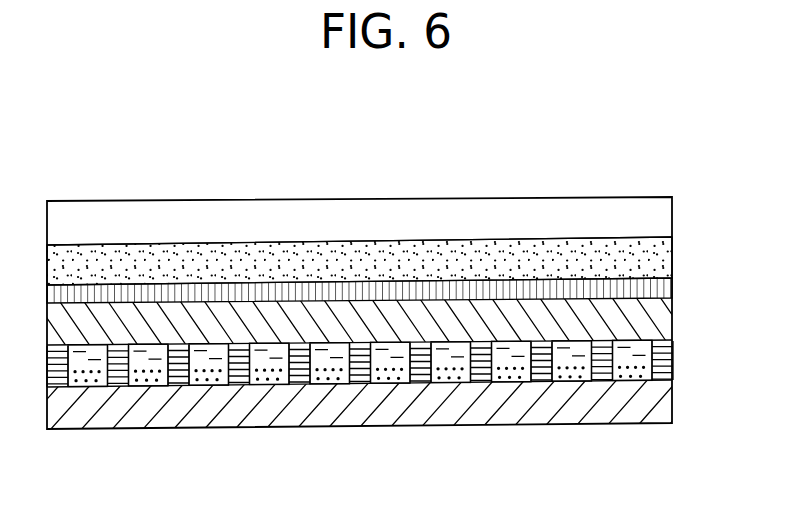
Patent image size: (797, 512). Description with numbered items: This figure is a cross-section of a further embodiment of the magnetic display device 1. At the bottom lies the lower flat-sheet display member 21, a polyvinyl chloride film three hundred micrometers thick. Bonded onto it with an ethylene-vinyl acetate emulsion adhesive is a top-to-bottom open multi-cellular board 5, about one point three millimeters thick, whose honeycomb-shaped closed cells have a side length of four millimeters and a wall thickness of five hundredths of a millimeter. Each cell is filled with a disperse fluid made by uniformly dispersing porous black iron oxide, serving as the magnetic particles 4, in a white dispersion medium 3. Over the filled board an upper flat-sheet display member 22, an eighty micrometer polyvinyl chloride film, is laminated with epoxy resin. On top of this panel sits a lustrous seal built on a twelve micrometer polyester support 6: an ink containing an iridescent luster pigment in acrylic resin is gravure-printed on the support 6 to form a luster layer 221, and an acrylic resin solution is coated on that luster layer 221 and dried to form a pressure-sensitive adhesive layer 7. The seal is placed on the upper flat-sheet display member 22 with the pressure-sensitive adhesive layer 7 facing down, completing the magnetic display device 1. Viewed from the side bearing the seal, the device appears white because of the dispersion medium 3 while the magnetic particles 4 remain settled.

The magnetic display device 1 is at (680, 173).
The support 6 is at (660, 217).
The luster layer 221 is at (660, 255).
The pressure-sensitive adhesive layer 7 is at (664, 290).
The upper flat-sheet display member 22 is at (672, 322).
The multi-cellular board 5 is at (391, 415).
The dispersion medium 3 is at (560, 355).
The magnetic particles 4 is at (518, 378).
The lower flat-sheet display member 21 is at (663, 402).